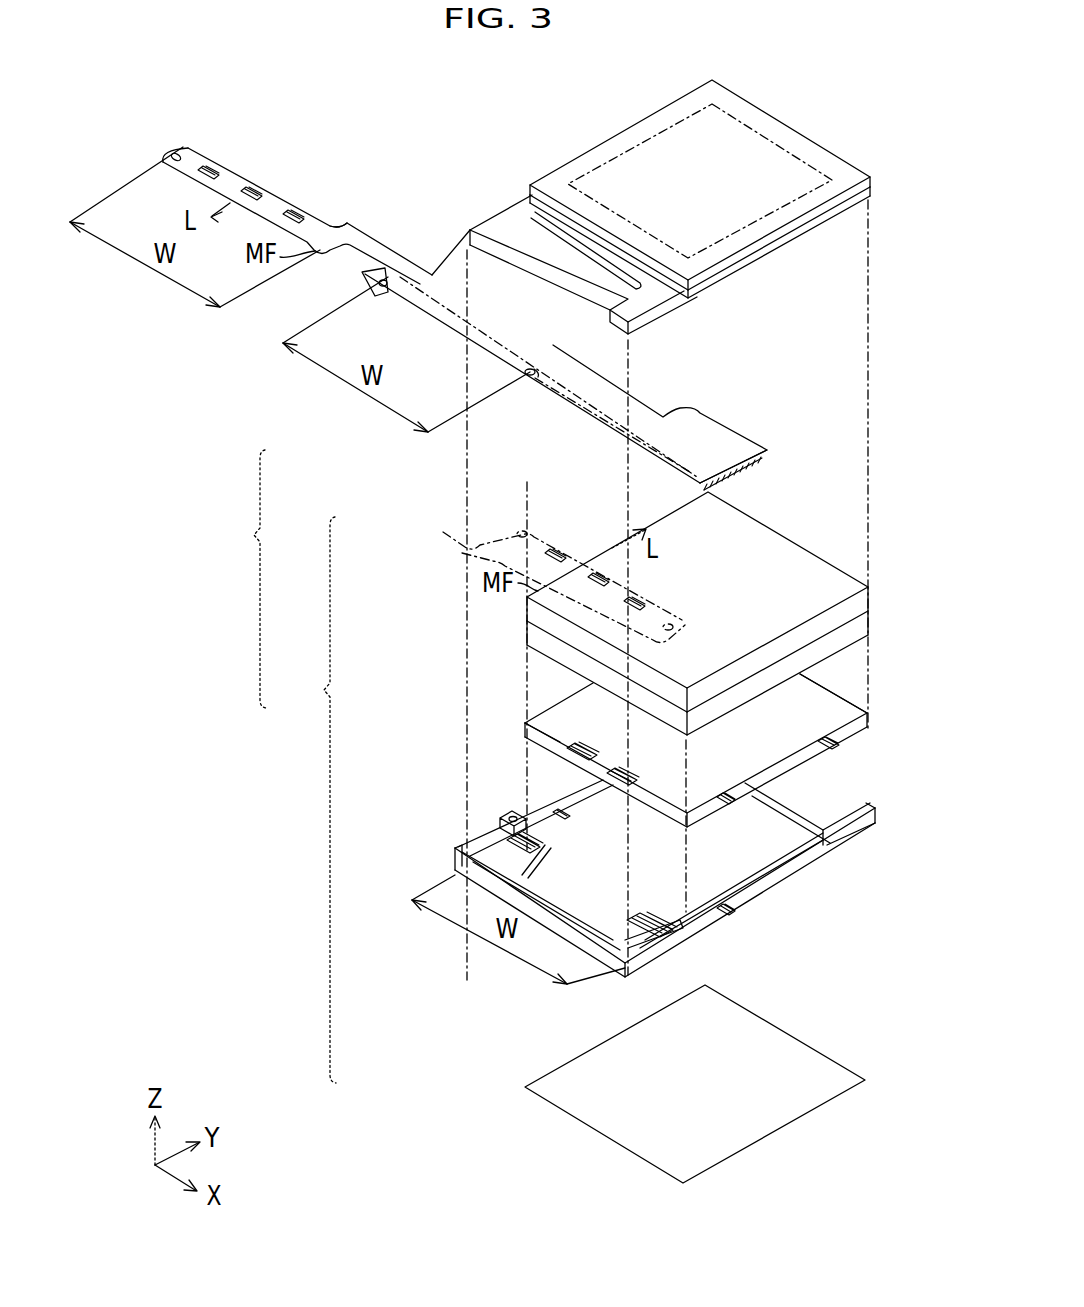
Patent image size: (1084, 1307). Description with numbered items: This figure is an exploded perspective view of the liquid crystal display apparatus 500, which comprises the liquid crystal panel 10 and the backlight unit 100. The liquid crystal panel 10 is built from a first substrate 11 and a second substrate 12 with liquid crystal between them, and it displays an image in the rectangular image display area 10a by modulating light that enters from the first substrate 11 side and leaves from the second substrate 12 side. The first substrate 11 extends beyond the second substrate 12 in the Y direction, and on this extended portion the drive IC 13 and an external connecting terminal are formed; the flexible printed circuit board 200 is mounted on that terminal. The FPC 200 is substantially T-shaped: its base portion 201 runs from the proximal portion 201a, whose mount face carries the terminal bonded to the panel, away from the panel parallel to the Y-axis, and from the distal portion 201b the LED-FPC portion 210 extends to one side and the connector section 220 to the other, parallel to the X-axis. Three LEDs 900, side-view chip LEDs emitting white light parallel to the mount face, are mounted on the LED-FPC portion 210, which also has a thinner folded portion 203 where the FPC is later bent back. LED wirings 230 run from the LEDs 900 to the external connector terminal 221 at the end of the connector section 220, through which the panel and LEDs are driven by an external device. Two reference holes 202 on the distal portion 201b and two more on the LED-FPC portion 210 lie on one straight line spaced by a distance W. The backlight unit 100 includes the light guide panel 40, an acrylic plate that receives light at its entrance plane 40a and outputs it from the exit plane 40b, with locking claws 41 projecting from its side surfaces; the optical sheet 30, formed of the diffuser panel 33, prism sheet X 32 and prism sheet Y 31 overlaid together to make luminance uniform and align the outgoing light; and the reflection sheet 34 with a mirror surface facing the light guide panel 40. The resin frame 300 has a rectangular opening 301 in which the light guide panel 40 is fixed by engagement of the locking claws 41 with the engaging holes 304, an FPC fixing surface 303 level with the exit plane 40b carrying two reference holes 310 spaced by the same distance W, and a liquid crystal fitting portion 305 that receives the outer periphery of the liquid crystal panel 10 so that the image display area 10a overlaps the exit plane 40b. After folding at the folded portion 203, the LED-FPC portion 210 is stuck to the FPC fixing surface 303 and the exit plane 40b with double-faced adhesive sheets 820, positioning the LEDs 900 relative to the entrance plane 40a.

The liquid crystal panel 10 is at (603, 268).
The image display area 10a is at (661, 130).
The first substrate 11 is at (880, 193).
The second substrate 12 is at (876, 176).
The drive IC 13 is at (676, 288).
The optical sheet 30 is at (625, 613).
The prism sheet Y 31 is at (533, 598).
The prism sheet X 32 is at (537, 625).
The diffuser panel 33 is at (540, 651).
The reflection sheet 34 is at (565, 1067).
The light guide panel 40 is at (639, 750).
The entrance plane 40a is at (548, 739).
The exit plane 40b is at (797, 706).
The locking claws 41 is at (838, 748).
The backlight unit 100 is at (307, 800).
The flexible printed circuit board 200 is at (485, 366).
The base portion 201 is at (558, 333).
The proximal portion 201a is at (548, 262).
The distal portion 201b is at (450, 330).
The reference holes 202 is at (175, 146).
The folded portion 203 is at (350, 223).
The LED-FPC portion 210 is at (273, 188).
The connector section 220 is at (722, 420).
The external connector terminal 221 is at (752, 476).
The LED wirings 230 is at (483, 333).
The frame 300 is at (625, 866).
The opening 301 is at (748, 845).
The FPC fixing surface 303 is at (492, 843).
The engaging holes 304 is at (833, 857).
The liquid crystal fitting portion 305 is at (513, 812).
The reference holes 310 is at (662, 933).
The liquid crystal display apparatus 500 is at (239, 579).
The double-faced adhesive sheets 820 is at (603, 780).
The LEDs 900 is at (195, 186).